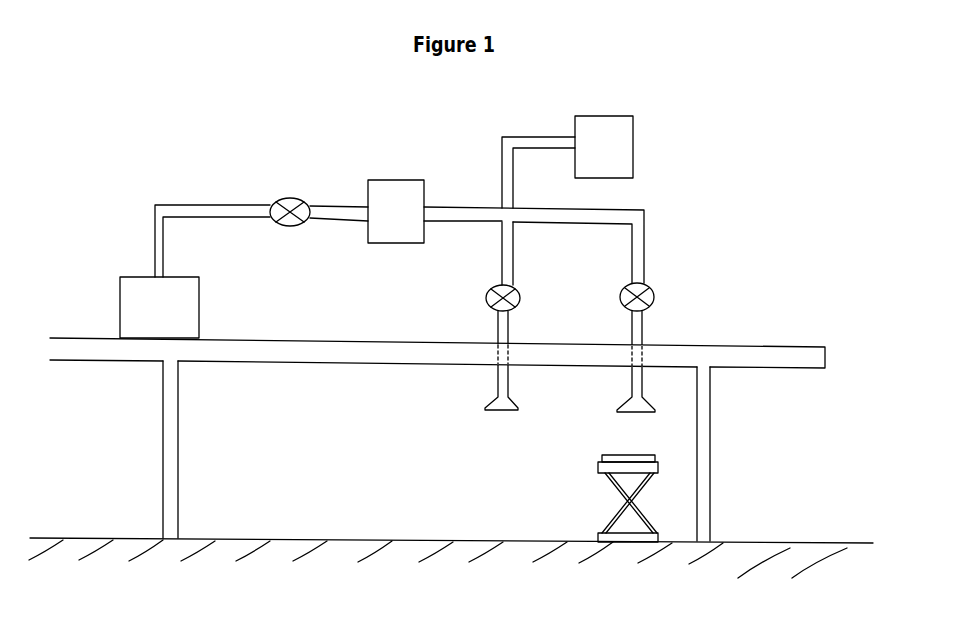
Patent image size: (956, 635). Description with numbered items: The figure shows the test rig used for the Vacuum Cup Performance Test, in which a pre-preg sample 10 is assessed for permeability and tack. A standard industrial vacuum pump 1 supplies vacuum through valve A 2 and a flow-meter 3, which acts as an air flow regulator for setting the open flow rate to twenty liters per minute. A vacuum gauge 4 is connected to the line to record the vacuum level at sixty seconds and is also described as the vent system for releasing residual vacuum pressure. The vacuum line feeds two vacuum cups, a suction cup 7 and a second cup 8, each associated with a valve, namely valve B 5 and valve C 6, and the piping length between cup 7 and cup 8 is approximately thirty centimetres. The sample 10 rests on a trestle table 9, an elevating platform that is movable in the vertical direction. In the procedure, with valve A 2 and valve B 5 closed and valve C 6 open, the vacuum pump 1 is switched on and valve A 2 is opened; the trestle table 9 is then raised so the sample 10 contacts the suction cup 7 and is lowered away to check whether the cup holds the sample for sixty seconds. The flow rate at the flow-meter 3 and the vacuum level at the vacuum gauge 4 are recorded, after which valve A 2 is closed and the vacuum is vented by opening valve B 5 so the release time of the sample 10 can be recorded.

The vacuum pump 1 is at (120, 304).
The valve A 2 is at (288, 199).
The flow-meter 3 is at (388, 192).
The vacuum gauge 4 is at (633, 137).
The valve B 5 is at (486, 298).
The valve C 6 is at (655, 297).
The suction cup 7 is at (622, 403).
The cup 8 is at (482, 410).
The trestle table 9 is at (620, 508).
The sample 10 is at (605, 452).